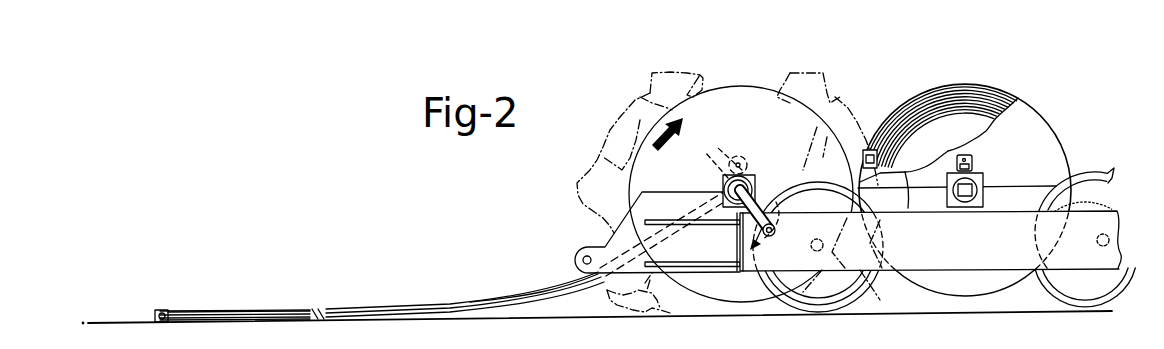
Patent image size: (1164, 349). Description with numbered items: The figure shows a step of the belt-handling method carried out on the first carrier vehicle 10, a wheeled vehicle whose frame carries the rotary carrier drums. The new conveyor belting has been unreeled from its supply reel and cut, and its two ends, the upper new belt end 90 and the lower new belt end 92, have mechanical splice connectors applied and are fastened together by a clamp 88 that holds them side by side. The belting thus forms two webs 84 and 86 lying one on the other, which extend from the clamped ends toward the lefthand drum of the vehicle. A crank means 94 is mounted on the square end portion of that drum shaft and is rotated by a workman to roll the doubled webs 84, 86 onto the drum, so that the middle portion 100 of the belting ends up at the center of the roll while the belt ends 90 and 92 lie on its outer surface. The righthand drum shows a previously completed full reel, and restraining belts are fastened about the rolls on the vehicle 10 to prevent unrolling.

The first carrier vehicle 10 is at (1090, 152).
The web of new belting material 84 is at (437, 300).
The web of new belting material 86 is at (526, 292).
The clamp 88 is at (160, 312).
The upper new belt end 90 is at (170, 314).
The lower new belt end 92 is at (170, 323).
The crank means 94 is at (745, 232).
The middle portion of the roll of belting material 100 is at (743, 156).